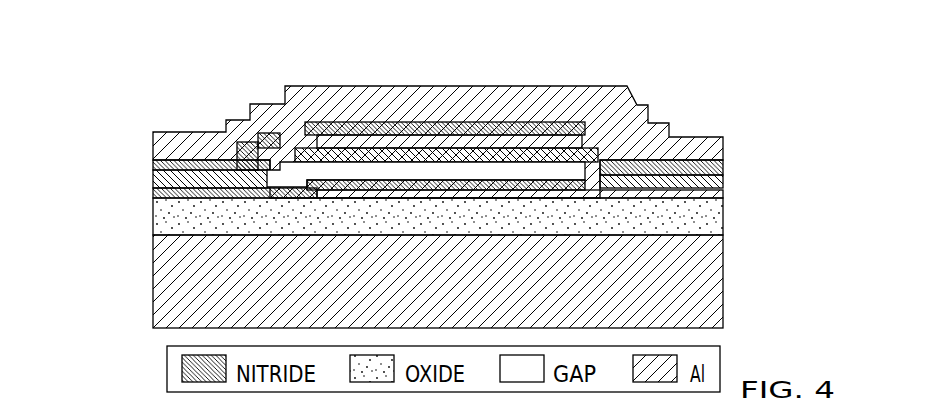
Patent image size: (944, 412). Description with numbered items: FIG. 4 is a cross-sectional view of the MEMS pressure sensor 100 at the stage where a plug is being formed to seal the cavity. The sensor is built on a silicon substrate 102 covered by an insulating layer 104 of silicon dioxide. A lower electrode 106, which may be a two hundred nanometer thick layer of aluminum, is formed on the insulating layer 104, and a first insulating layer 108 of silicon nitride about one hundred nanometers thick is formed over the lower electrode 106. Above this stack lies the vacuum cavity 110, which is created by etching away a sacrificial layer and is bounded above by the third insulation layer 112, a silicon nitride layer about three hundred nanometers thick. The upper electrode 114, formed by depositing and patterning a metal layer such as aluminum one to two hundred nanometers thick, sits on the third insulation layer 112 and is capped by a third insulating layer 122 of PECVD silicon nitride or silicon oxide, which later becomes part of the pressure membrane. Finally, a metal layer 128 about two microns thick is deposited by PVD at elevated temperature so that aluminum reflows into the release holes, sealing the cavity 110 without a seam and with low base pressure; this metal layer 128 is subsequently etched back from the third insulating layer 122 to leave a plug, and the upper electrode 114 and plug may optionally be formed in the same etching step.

The MEMS pressure sensor 100 is at (79, 61).
The silicon substrate 102 is at (153, 313).
The insulating layer 104 is at (153, 223).
The lower electrode 106 is at (570, 193).
The first insulating layer 108 is at (153, 192).
The vacuum cavity 110 is at (244, 124).
The third insulation layer 112 is at (772, 208).
The upper electrode 114 is at (517, 145).
The third insulating layer 122 is at (600, 125).
The metal layer 128 is at (362, 86).